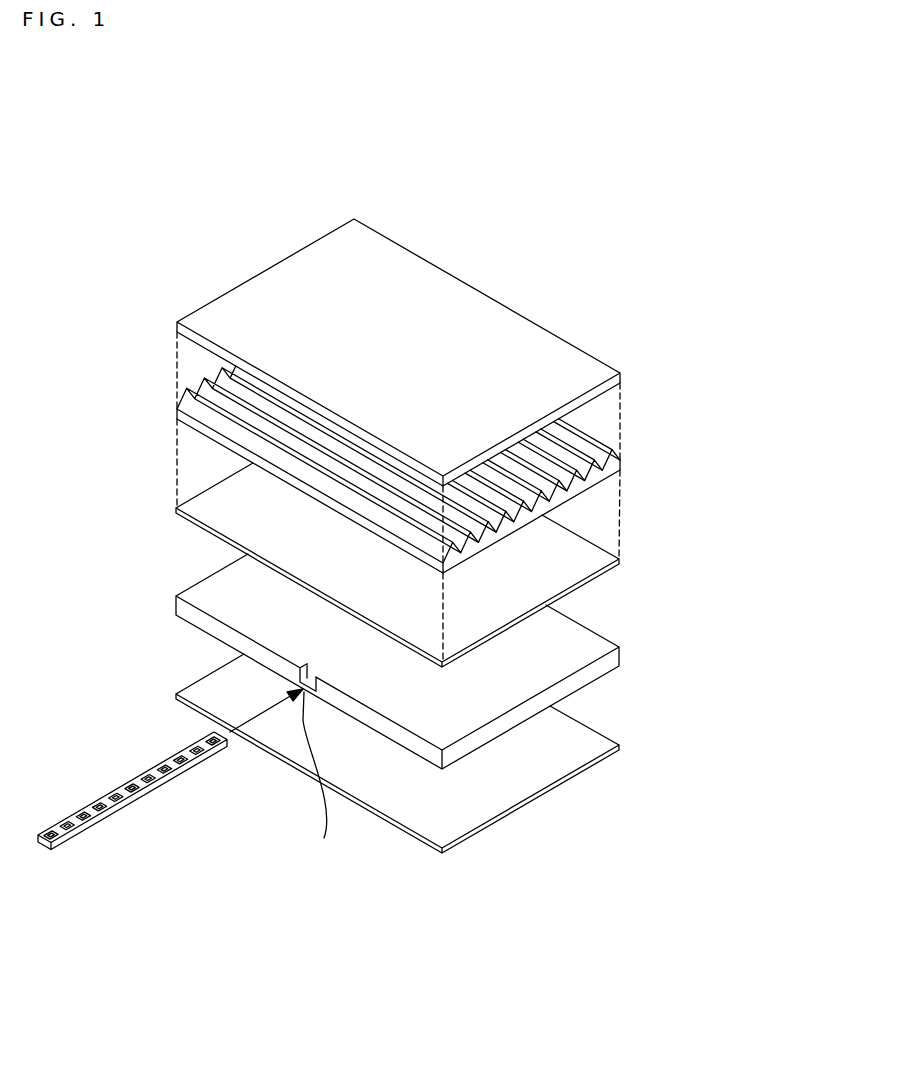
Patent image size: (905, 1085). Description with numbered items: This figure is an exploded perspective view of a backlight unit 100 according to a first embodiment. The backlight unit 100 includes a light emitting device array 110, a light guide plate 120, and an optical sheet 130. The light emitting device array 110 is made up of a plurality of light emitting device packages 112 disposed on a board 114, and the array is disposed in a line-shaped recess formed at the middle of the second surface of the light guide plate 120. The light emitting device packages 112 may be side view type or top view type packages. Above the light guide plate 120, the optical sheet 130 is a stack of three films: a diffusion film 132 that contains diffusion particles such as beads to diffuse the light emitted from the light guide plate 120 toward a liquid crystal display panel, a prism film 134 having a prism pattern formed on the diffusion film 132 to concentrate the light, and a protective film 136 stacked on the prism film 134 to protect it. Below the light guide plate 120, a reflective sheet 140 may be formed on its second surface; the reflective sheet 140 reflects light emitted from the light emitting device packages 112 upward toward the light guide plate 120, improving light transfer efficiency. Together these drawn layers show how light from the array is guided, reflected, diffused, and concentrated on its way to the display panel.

The backlight unit 100 is at (759, 142).
The light emitting device array 110 is at (149, 807).
The light emitting device packages 112 is at (147, 792).
The board 114 is at (118, 807).
The light guide plate 120 is at (604, 674).
The optical sheet 130 is at (742, 390).
The diffusion film 132 is at (604, 563).
The prism film 134 is at (604, 479).
The protective film 136 is at (604, 395).
The reflective sheet 140 is at (604, 748).